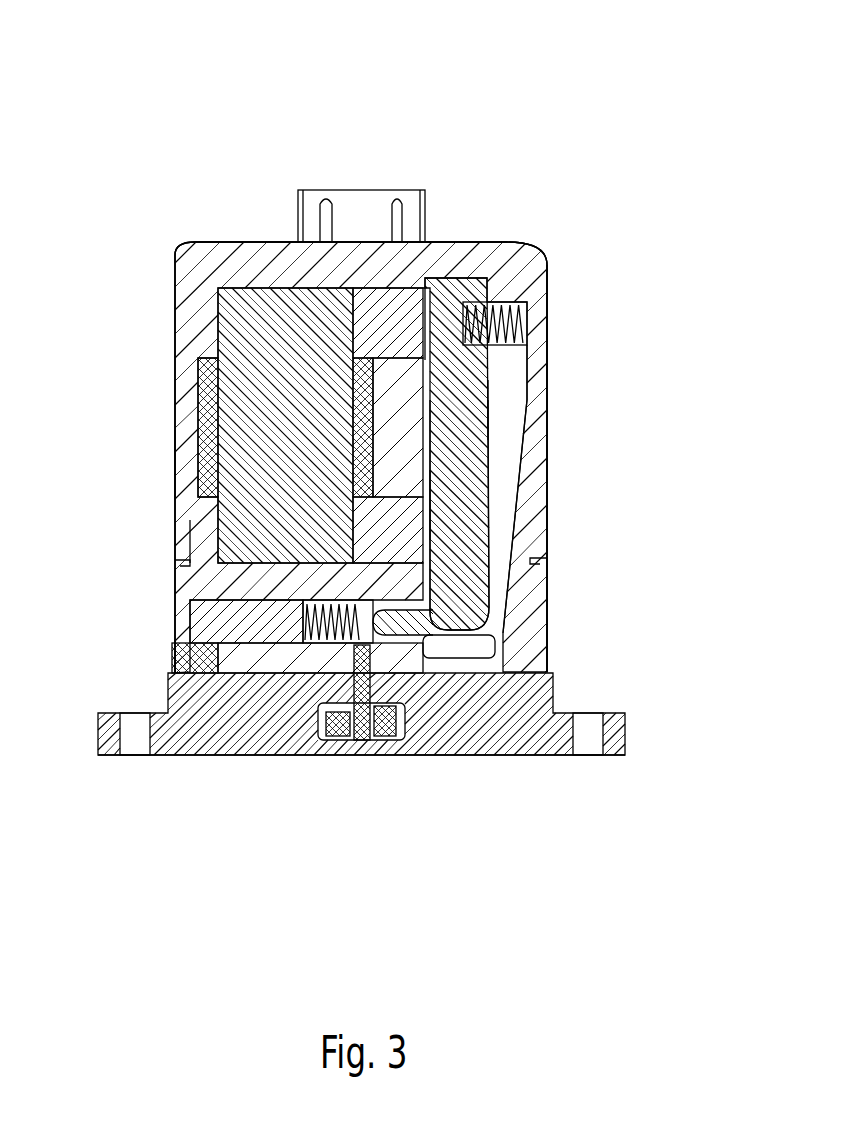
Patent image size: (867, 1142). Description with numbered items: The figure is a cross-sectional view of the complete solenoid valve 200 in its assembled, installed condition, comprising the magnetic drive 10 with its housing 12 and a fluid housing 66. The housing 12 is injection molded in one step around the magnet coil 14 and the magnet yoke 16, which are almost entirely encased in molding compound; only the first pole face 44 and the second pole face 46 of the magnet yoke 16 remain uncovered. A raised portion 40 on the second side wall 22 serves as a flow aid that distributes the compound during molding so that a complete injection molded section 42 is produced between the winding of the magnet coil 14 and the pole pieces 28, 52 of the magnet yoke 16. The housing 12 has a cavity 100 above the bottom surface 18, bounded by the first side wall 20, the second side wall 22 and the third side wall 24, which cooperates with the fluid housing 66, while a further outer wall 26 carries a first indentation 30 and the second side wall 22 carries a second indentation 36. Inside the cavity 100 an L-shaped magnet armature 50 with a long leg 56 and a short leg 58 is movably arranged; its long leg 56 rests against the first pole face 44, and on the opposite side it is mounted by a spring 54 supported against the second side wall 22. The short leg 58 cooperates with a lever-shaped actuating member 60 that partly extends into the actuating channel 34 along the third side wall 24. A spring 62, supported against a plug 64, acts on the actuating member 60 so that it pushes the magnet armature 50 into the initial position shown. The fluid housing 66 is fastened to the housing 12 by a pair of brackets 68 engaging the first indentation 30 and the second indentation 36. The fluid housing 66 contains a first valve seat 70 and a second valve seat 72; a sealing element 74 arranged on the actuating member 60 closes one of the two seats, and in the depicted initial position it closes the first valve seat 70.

The solenoid valve 200 is at (165, 75).
The magnetic drive 10 is at (165, 245).
The housing 12 is at (188, 305).
The first side wall 20 is at (445, 258).
The second side wall 22 is at (548, 272).
The magnet coil 14 is at (200, 404).
The magnet yoke 16 is at (230, 535).
The bottom surface 18 is at (516, 512).
The third side wall 24 is at (282, 665).
The outer wall 26 is at (188, 480).
The pole piece 28 is at (400, 538).
The first indentation 30 is at (180, 563).
The actuating channel 34 is at (368, 672).
The second indentation 36 is at (535, 560).
The raised portion 40 is at (516, 415).
The injection molded section 42 is at (412, 447).
The first pole face 44 is at (430, 325).
The second pole face 46 is at (427, 505).
The magnet armature 50 is at (462, 412).
The pole piece 52 is at (398, 337).
The spring 54 is at (520, 325).
The long leg 56 is at (464, 470).
The short leg 58 is at (430, 626).
The actuating member 60 is at (378, 655).
The spring 62 is at (312, 640).
The plug 64 is at (190, 630).
The fluid housing 66 is at (200, 757).
The brackets 68 is at (172, 645).
The first valve seat 70 is at (332, 740).
The second valve seat 72 is at (390, 740).
The sealing element 74 is at (358, 742).
The cavity 100 is at (520, 467).